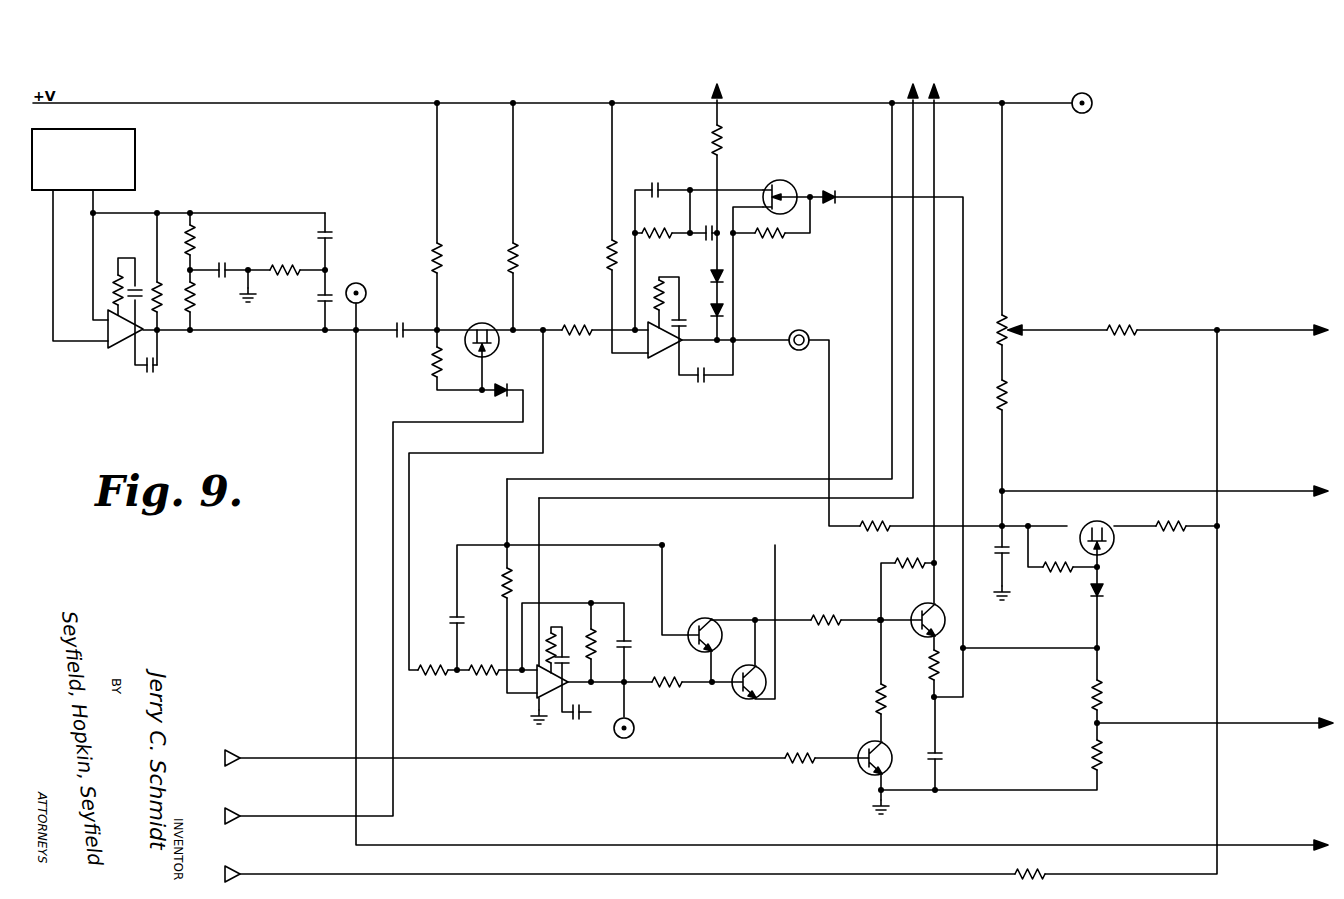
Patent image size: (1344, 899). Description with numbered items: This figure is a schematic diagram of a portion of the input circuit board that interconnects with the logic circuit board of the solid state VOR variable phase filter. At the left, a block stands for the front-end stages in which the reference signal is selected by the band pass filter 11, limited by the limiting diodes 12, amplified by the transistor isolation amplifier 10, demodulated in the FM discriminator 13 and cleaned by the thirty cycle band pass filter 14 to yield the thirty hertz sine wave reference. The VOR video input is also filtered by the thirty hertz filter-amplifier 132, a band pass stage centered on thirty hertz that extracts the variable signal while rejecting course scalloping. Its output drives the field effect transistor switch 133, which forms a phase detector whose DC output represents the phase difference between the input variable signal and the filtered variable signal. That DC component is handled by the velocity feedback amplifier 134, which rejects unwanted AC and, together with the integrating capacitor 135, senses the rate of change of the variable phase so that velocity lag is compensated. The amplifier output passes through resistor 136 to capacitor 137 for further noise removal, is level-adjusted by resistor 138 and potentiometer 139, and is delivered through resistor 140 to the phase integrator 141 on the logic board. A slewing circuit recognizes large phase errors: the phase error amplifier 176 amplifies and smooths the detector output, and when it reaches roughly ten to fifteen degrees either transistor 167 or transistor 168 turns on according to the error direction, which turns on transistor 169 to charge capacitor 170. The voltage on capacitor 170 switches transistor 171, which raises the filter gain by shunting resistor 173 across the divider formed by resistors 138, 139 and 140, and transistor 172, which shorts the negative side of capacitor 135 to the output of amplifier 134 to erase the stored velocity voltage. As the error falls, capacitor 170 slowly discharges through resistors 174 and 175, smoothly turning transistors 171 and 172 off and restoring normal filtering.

The transistor isolation amplifier 10 is at (83, 159).
The band pass filter 11 is at (83, 159).
The limiting diodes 12 is at (83, 159).
The FM discriminator 13 is at (83, 159).
The 30 cycle band pass filter 14 is at (83, 159).
The filter-amplifier 132 is at (120, 346).
The field effect transistor switch 133 is at (482, 323).
The velocity feedback amplifier 134 is at (668, 356).
The capacitor 135 is at (705, 239).
The resistor 136 is at (868, 530).
The capacitor 137 is at (1003, 554).
The resistor 138 is at (1010, 392).
The potentiometer 139 is at (1010, 326).
The resistor 140 is at (1118, 328).
The integrated circuit phase integrator 141 is at (1283, 367).
The transistor 167 is at (718, 600).
The transistor 168 is at (741, 699).
The transistor 169 is at (922, 606).
The capacitor 170 is at (940, 752).
The transistor 171 is at (1108, 552).
The transistor 172 is at (780, 180).
The resistor 173 is at (1170, 532).
The resistor 174 is at (1103, 682).
The resistor 175 is at (1103, 748).
The phase error amplifier 176 is at (537, 695).